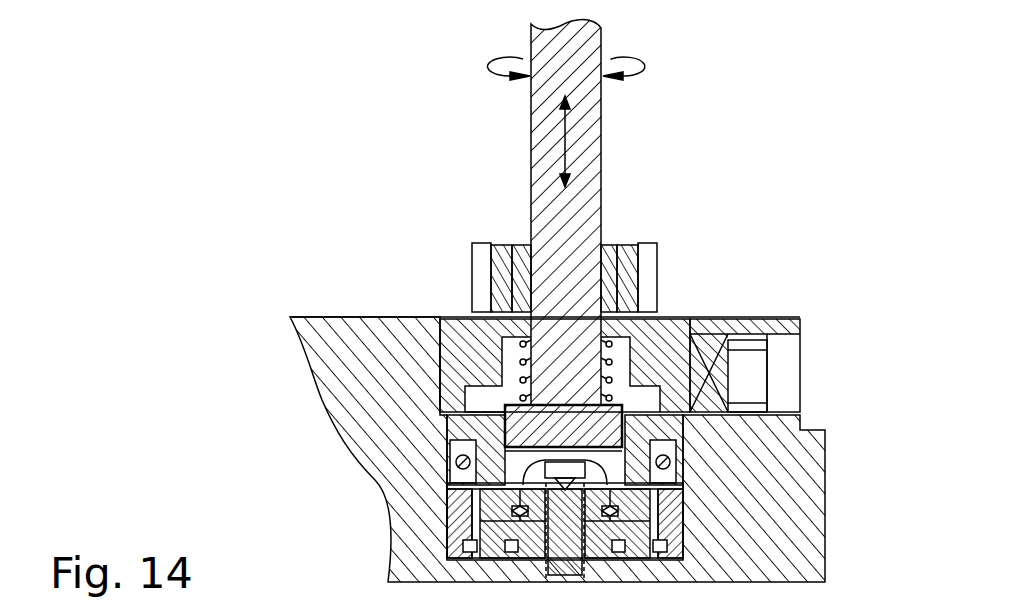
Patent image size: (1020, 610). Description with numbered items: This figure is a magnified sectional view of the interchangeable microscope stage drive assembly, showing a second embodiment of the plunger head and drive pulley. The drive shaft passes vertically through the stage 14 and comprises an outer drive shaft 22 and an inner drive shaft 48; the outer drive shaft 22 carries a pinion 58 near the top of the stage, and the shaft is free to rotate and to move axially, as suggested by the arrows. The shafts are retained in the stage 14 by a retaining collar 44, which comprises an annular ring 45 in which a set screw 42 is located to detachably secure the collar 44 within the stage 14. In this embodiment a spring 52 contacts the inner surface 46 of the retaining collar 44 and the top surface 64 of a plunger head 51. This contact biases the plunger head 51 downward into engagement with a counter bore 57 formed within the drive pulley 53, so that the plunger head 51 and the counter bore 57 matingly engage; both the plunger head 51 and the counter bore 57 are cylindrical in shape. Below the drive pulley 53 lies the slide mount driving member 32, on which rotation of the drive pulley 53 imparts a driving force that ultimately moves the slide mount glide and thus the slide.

The stage 14 is at (340, 385).
The outer drive shaft 22 is at (630, 253).
The slide mount driving member 32 is at (447, 490).
The set screw 42 is at (755, 385).
The retaining collar 44 is at (422, 317).
The annular ring 45 is at (440, 370).
The inner surface 46 is at (470, 410).
The inner drive shaft 48 is at (586, 278).
The plunger head 51 is at (600, 408).
The spring 52 is at (573, 433).
The drive pulley 53 is at (485, 440).
The counter bore 57 is at (665, 428).
The pinion 58 is at (484, 245).
The top surface 64 is at (700, 326).